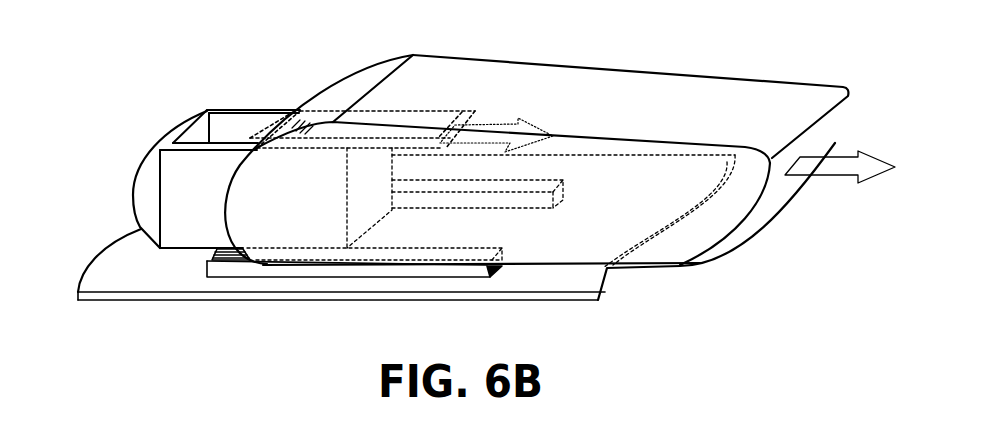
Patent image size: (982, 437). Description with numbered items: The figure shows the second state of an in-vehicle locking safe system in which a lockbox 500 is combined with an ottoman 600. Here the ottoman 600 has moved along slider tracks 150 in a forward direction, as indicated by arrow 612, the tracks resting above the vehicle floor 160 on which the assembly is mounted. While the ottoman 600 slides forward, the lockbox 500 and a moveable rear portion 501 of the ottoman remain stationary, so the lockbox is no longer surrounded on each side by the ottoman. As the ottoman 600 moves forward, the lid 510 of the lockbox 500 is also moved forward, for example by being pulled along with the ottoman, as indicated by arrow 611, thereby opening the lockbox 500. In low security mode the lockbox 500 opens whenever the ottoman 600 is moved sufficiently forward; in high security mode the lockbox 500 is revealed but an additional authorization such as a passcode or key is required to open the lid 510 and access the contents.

The slider tracks 150 is at (227, 280).
The floor 160 is at (118, 280).
The lockbox 500 is at (235, 110).
The moveable rear portion 501 is at (127, 180).
The lid 510 is at (420, 122).
The ottoman 600 is at (753, 75).
The arrow 611 is at (537, 127).
The arrow 612 is at (847, 180).